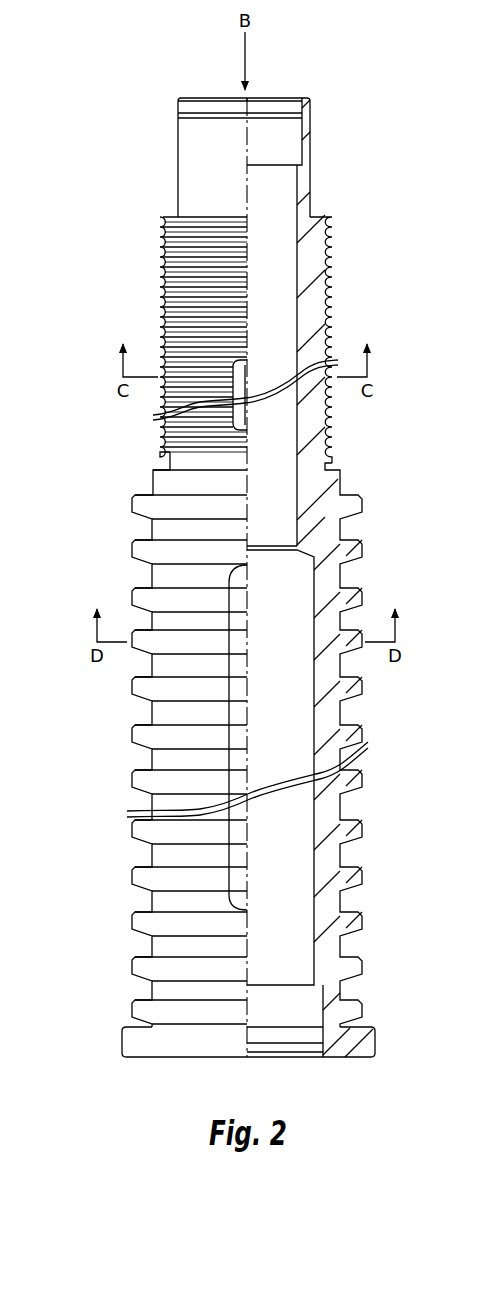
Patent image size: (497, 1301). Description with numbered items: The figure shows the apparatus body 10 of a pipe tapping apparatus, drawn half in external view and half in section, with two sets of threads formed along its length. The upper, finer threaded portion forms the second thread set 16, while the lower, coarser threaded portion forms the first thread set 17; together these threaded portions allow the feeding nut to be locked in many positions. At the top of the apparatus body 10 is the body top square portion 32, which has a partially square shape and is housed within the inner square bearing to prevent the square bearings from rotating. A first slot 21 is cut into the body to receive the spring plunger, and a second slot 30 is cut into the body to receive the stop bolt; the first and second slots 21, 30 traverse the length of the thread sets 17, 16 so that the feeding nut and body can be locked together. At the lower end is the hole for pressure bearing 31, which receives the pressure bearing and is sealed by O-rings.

The apparatus body 10 is at (303, 197).
The second thread set 16 is at (335, 248).
The first thread set 17 is at (132, 873).
The first slot 21 is at (233, 372).
The second slot 30 is at (243, 838).
The hole for pressure bearing 31 is at (330, 1022).
The body top square portion 32 is at (175, 175).